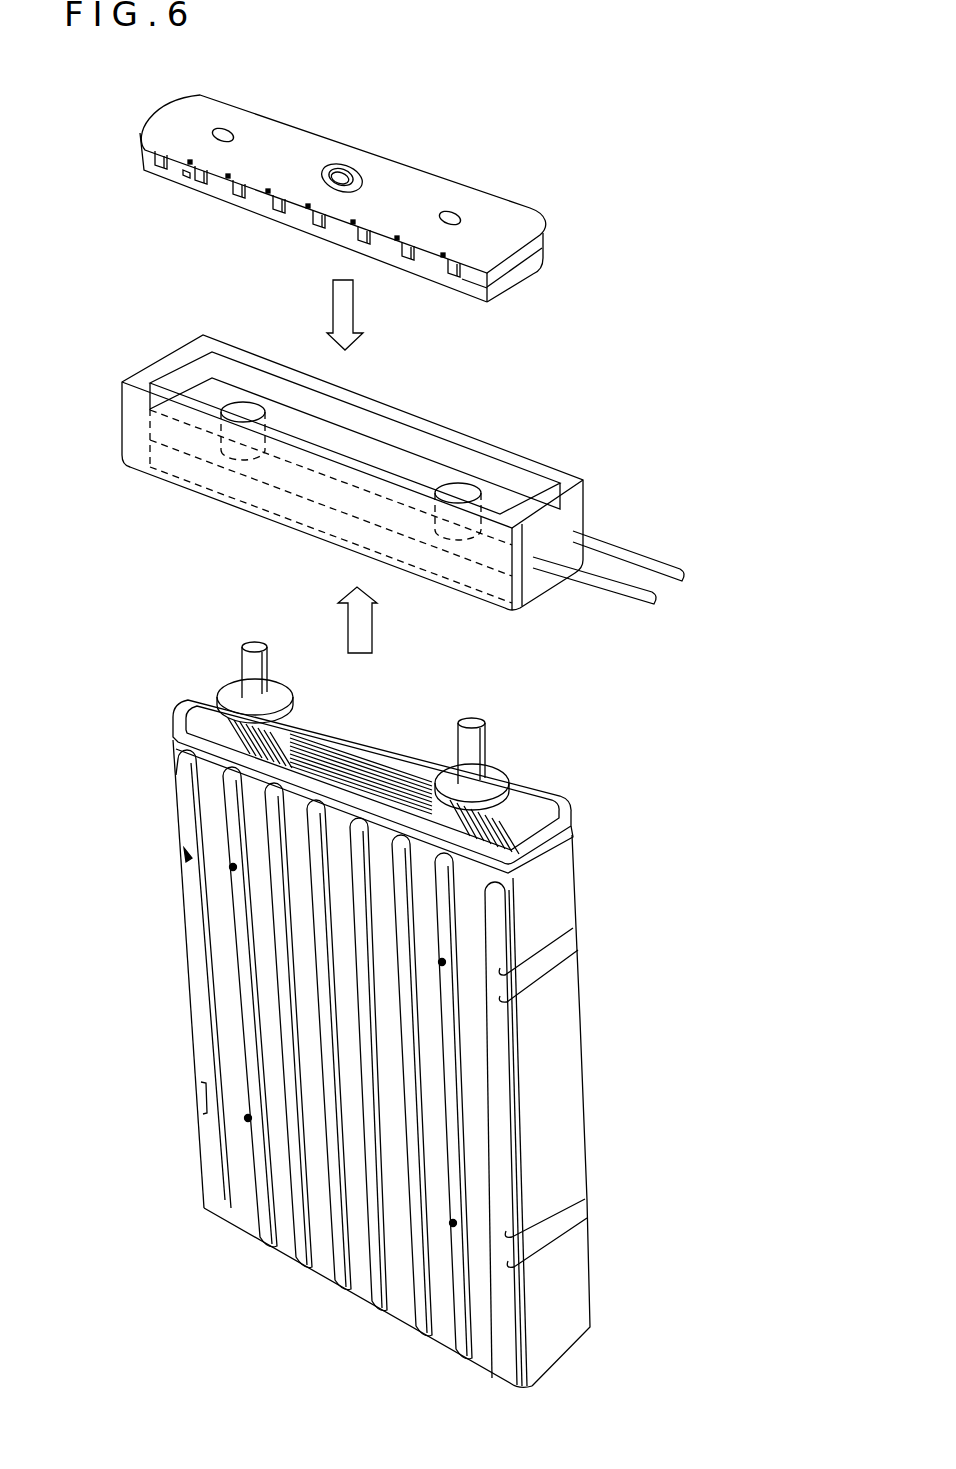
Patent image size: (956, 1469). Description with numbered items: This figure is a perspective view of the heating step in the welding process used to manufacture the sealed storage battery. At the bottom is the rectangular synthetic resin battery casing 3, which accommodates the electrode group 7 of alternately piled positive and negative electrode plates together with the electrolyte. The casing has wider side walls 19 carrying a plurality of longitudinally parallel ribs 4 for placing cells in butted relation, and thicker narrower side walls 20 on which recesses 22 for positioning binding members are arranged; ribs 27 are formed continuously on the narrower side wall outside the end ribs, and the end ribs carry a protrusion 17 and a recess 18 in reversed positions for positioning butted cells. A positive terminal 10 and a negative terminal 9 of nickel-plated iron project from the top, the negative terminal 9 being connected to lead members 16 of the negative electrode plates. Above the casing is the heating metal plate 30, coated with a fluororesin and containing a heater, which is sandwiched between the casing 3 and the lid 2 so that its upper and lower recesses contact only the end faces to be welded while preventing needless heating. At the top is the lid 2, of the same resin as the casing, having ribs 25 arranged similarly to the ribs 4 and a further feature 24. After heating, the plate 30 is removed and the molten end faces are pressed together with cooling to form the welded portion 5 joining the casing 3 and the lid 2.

The lid 2 is at (543, 235).
The battery casing 3 is at (212, 798).
The ribs 4 is at (243, 992).
The welded portion 5 is at (200, 735).
The electrode group 7 is at (365, 753).
The negative terminal 9 is at (482, 750).
The positive terminal 10 is at (248, 668).
The lead members 16 is at (518, 805).
The protrusion 17 is at (232, 867).
The recess 18 is at (248, 1118).
The wider side walls 19 is at (270, 1162).
The narrower side walls 20 is at (565, 1308).
The recesses 22 is at (188, 855).
The engaging tab 24 is at (220, 183).
The ribs 25 is at (188, 175).
The ribs 27 is at (195, 932).
The heating metal plate 30 is at (522, 455).